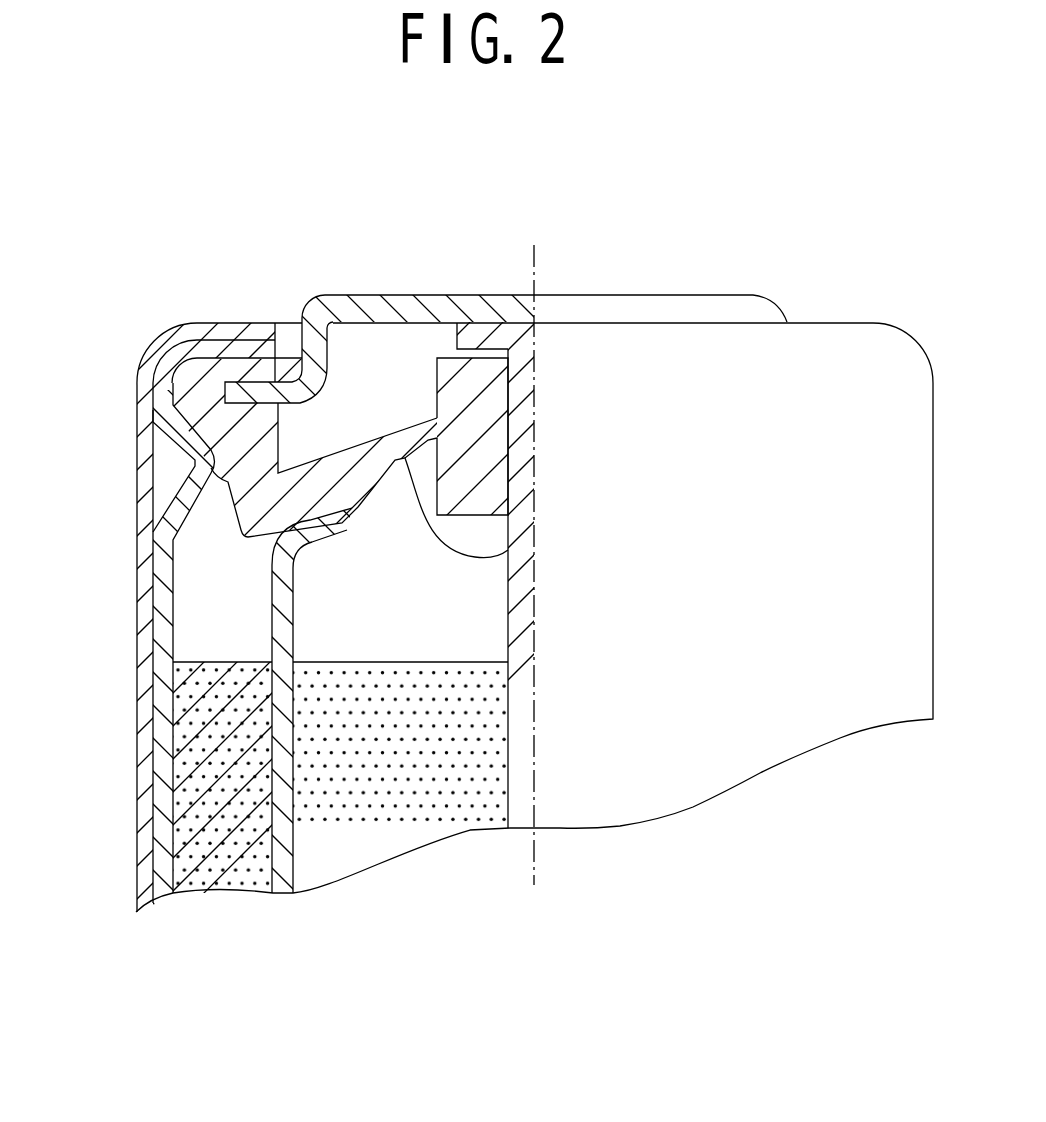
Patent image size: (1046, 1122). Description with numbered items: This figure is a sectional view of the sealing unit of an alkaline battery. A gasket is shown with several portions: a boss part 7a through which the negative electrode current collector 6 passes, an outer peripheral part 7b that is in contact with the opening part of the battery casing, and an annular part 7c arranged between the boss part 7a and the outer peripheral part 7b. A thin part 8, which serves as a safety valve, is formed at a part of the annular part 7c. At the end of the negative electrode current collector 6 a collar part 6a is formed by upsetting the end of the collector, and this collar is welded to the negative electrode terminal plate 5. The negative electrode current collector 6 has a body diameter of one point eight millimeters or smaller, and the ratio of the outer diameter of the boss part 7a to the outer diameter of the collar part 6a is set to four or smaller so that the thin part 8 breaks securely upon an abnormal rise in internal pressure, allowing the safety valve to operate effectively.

The negative electrode terminal plate 5 is at (443, 300).
The negative electrode current collector 6 is at (510, 607).
The collar part 6a is at (497, 330).
The boss part 7a is at (477, 382).
The outer peripheral part 7b is at (187, 390).
The annular part 7c is at (362, 462).
The thin part 8 is at (510, 550).